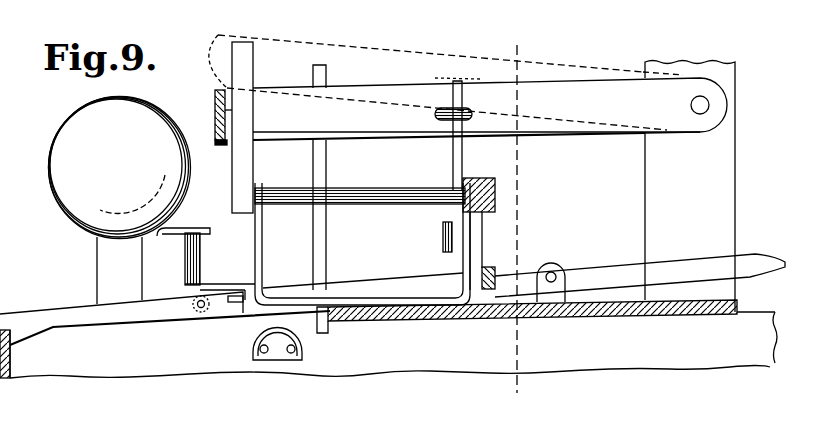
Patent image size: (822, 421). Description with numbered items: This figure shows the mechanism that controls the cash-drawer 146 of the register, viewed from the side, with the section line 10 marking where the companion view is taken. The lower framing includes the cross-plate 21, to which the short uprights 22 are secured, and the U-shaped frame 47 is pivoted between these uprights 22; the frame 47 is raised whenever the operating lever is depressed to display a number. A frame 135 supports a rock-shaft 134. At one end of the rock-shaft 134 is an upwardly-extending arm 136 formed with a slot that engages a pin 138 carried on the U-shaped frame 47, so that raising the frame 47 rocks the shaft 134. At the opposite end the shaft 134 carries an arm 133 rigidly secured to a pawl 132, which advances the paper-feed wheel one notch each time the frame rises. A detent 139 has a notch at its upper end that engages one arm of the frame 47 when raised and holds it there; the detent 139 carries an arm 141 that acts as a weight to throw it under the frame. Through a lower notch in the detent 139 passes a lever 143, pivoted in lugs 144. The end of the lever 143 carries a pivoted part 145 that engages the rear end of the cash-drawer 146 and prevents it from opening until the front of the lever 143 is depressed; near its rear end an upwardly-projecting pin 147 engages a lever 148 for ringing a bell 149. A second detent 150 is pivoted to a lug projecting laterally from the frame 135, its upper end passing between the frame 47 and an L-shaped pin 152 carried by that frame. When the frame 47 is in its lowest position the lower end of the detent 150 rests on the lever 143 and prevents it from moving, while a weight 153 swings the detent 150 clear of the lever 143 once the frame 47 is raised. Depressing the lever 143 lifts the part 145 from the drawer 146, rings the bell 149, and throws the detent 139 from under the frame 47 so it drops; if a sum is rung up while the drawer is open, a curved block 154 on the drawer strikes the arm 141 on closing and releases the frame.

The section line 10 is at (517, 218).
The cross-plate 21 is at (618, 307).
The short uprights 22 is at (689, 187).
The U-shaped frame 47 is at (468, 87).
The pawl 132 is at (495, 270).
The arm 133 is at (478, 223).
The rock-shaft 134 is at (392, 204).
The frame 135 is at (262, 248).
The upwardly-extending arm 136 is at (242, 160).
The pin 138 is at (214, 108).
The detent 139 is at (322, 250).
The arm 141 is at (322, 325).
The lever 143 is at (640, 275).
The lugs 144 is at (552, 295).
The pivoted part 145 is at (50, 313).
The cash-drawer 146 is at (388, 344).
The upwardly-projecting pin 147 is at (213, 268).
The lever 148 is at (192, 232).
The bell 149 is at (120, 201).
The detent 150 is at (460, 155).
The L-shaped pin 152 is at (434, 115).
The weight 153 is at (446, 247).
The curved block 154 is at (253, 337).